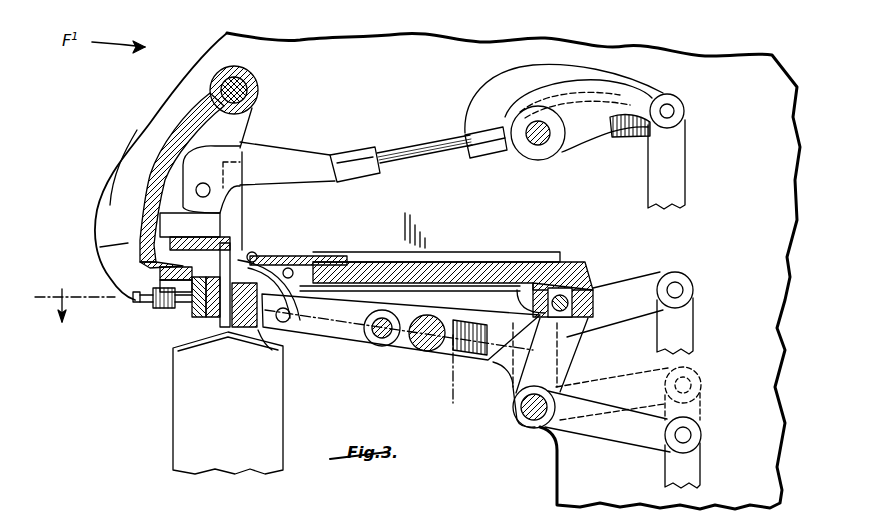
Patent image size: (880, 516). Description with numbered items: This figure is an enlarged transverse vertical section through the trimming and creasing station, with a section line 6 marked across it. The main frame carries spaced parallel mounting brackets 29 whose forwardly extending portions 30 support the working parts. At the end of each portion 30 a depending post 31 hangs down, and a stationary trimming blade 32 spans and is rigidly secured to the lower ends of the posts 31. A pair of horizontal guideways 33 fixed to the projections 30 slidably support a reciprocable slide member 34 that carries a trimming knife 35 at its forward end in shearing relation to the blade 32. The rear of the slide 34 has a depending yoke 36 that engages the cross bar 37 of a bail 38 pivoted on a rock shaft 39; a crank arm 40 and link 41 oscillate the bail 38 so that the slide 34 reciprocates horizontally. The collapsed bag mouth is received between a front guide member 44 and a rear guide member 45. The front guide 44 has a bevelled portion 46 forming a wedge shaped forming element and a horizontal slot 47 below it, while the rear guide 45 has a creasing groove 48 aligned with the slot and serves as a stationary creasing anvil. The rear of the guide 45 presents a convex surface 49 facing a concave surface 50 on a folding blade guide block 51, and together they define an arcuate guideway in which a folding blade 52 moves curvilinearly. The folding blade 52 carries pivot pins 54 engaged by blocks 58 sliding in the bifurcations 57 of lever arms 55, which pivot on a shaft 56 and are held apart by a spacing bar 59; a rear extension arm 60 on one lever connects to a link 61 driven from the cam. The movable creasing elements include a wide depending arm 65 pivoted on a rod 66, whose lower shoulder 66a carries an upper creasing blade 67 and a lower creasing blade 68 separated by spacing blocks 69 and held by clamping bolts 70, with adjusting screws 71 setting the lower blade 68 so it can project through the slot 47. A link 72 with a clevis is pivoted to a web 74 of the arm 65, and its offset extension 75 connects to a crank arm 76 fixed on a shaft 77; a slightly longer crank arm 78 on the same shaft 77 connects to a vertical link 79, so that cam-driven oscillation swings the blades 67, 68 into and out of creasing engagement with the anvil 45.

The section line 6- 6 is at (250, 353).
The mounting bracket 29 is at (748, 55).
The forwardly extending portion 30 is at (321, 25).
The depending post 31 is at (172, 228).
The stationary trimming blade 32 is at (195, 231).
The guideway 33 is at (506, 252).
The slide member 34 is at (444, 262).
The trimming knife 35 is at (324, 257).
The depending yoke 36 is at (594, 297).
The cross bar 37 is at (562, 319).
The bail 38 is at (565, 352).
The rock shaft 39 is at (534, 428).
The crank arm 40 is at (610, 440).
The link 41 is at (700, 472).
The front guide member 44 is at (216, 322).
The rear guide member 45 is at (241, 340).
The bevelled portion 46 is at (160, 272).
The slot 47 is at (200, 322).
The creasing groove 48 is at (232, 348).
The convex surface 49 is at (302, 256).
The concave surface 50 is at (282, 255).
The folding blade guide block 51 is at (268, 260).
The folding blade 52 is at (260, 266).
The pivot pin 54 is at (275, 326).
The lever arm 55 is at (352, 342).
The shaft 56 is at (382, 346).
The bifurcation 57 is at (296, 348).
The block 58 is at (298, 305).
The spacing bar 59 is at (424, 351).
The rear extension arm 60 is at (644, 278).
The link 61 is at (694, 318).
The depending arm 65 is at (112, 187).
The rod 66 is at (240, 80).
The shoulder 66a is at (160, 258).
The upper creasing blade 67 is at (243, 232).
The lower creasing blade 68 is at (200, 320).
The spacing block 69 is at (195, 310).
The clamping bolt 70 is at (100, 247).
The adjusting screw 71 is at (136, 302).
The link 72 is at (412, 152).
The web 74 is at (252, 124).
The offset extension 75 is at (500, 82).
The crank arm 76 is at (603, 143).
The shaft 77 is at (535, 145).
The crank arm 78 is at (645, 84).
The vertical link 79 is at (685, 158).